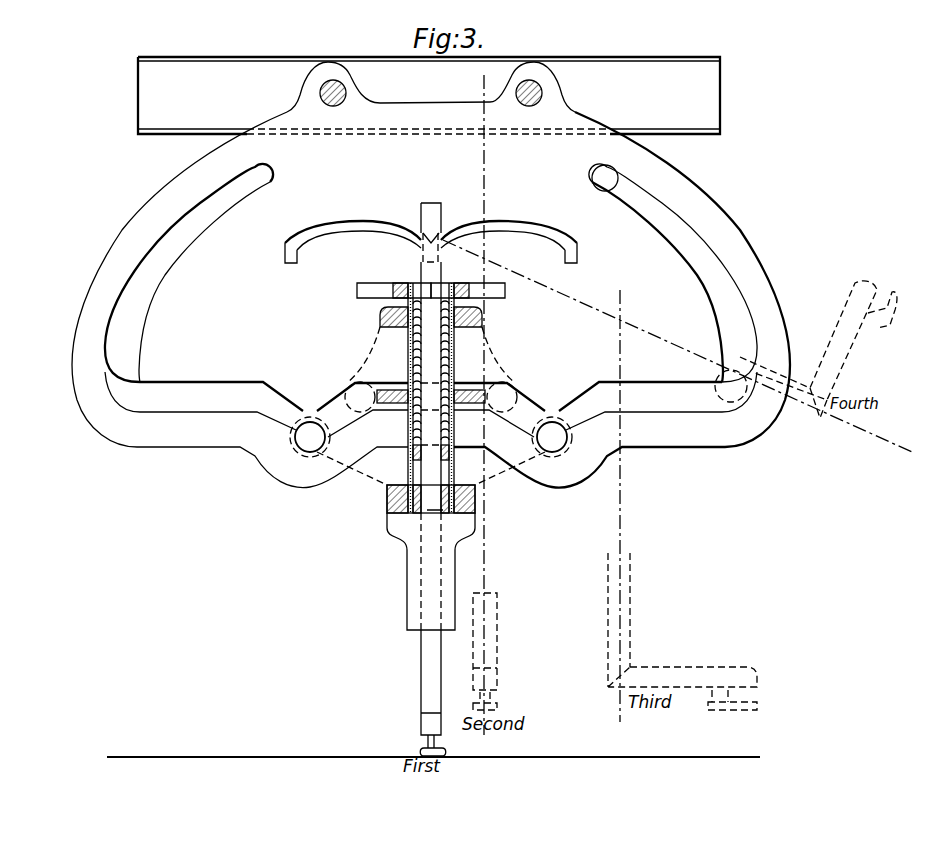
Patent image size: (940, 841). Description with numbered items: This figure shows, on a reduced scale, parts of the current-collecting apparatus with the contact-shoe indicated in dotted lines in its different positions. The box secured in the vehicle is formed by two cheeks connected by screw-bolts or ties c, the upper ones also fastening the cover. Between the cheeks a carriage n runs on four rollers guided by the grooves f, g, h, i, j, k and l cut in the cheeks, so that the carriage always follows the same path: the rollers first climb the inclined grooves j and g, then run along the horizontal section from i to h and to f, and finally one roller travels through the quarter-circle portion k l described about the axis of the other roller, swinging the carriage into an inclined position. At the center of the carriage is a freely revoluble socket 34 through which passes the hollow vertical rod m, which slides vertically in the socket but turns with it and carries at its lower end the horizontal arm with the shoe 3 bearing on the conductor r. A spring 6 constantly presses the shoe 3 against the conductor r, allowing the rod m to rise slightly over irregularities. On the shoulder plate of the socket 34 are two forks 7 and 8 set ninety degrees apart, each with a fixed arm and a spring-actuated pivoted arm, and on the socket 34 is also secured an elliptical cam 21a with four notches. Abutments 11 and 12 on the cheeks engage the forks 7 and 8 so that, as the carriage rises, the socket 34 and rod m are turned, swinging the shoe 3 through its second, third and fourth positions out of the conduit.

The screw-bolts or ties c is at (324, 101).
The groove l is at (431, 272).
The abutment 12 is at (345, 229).
The abutment 11 is at (512, 229).
The fork 8 is at (382, 291).
The fork 7 is at (475, 292).
The carriage n is at (483, 317).
The spring 6 is at (407, 345).
The elliptical cam 21a is at (478, 397).
The groove k is at (431, 300).
The groove j is at (310, 425).
The groove i is at (362, 409).
The groove h is at (499, 409).
The groove g is at (552, 421).
The groove f is at (731, 386).
The socket 34 is at (408, 468).
The rod m is at (436, 680).
The shoe 3 is at (423, 751).
The conductor r is at (433, 747).